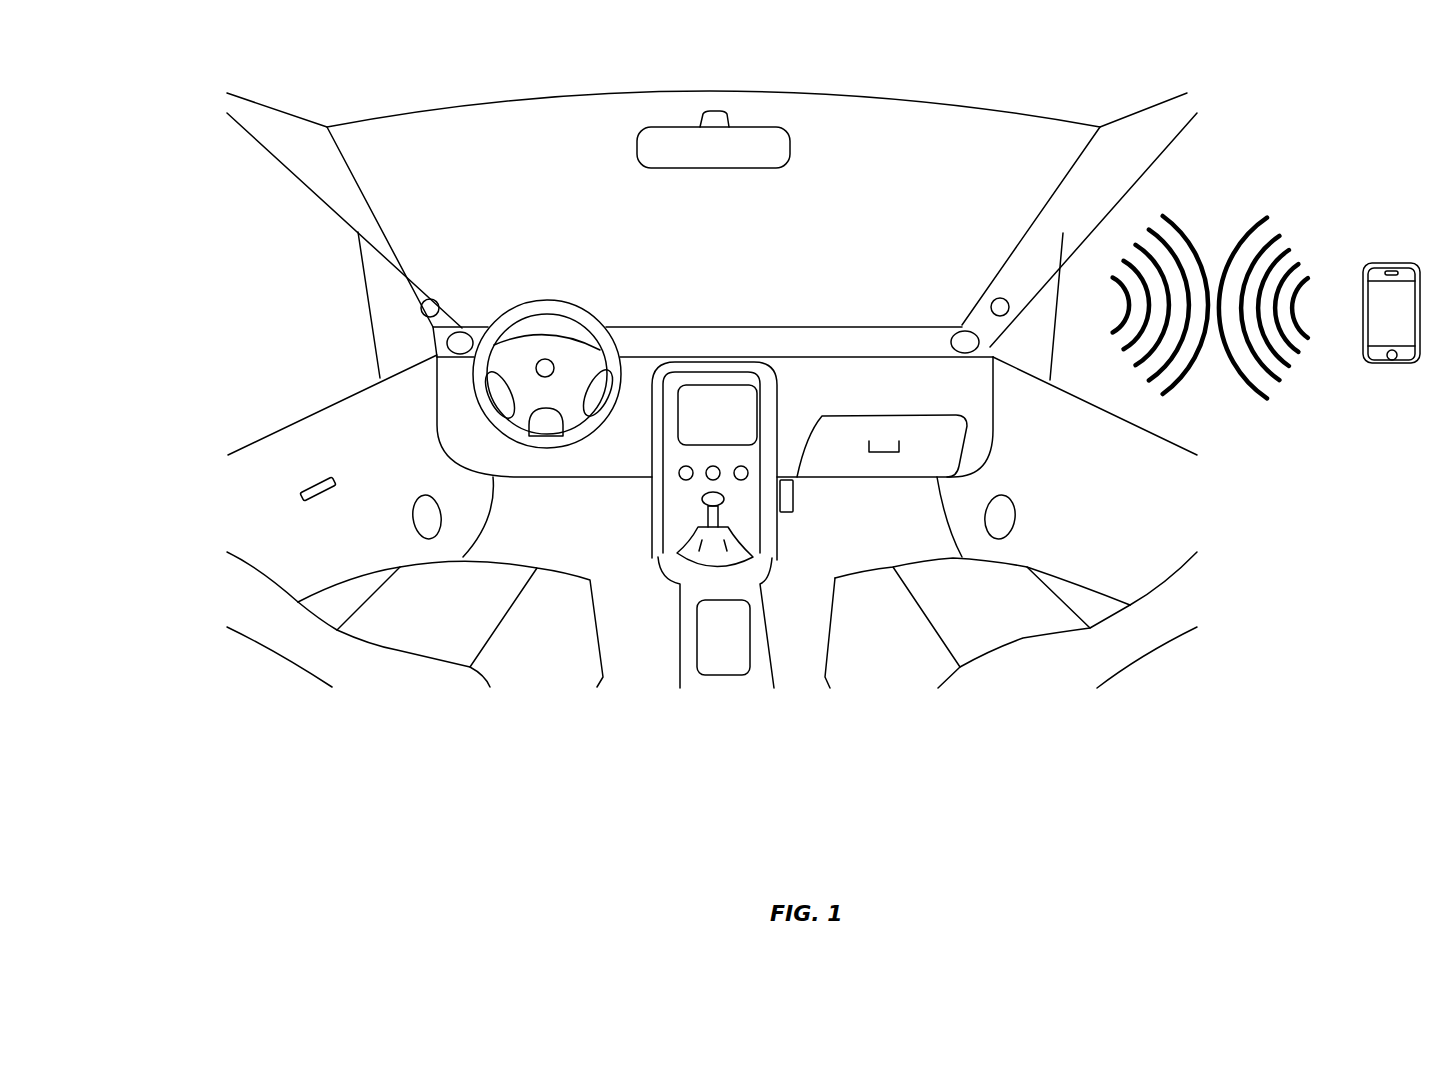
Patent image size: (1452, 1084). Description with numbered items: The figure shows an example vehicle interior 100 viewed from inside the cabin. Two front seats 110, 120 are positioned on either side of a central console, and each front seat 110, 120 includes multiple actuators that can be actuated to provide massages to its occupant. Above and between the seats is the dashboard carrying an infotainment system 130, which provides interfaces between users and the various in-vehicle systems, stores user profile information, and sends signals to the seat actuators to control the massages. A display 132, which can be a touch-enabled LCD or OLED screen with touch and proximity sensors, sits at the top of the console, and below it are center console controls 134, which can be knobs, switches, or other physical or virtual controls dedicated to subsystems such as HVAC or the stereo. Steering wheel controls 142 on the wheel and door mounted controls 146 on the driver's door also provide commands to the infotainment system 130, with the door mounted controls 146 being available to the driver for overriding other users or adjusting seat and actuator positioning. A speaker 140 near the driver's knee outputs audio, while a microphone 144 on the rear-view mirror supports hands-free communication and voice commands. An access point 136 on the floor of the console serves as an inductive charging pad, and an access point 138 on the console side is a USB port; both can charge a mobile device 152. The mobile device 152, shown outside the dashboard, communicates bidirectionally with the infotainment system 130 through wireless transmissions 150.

The vehicle interior 100 is at (130, 162).
The front seat 110 is at (448, 617).
The front seat 120 is at (1001, 617).
The infotainment system 130 is at (802, 394).
The display 132 is at (731, 427).
The center console controls 134 is at (668, 517).
The access point 136 is at (697, 633).
The access point 138 is at (793, 503).
The speaker 140 is at (441, 525).
The steering wheel controls 142 is at (510, 390).
The microphone 144 is at (743, 168).
The door mounted controls 146 is at (338, 487).
The wireless transmissions 150 is at (1290, 263).
The mobile device 152 is at (1410, 263).